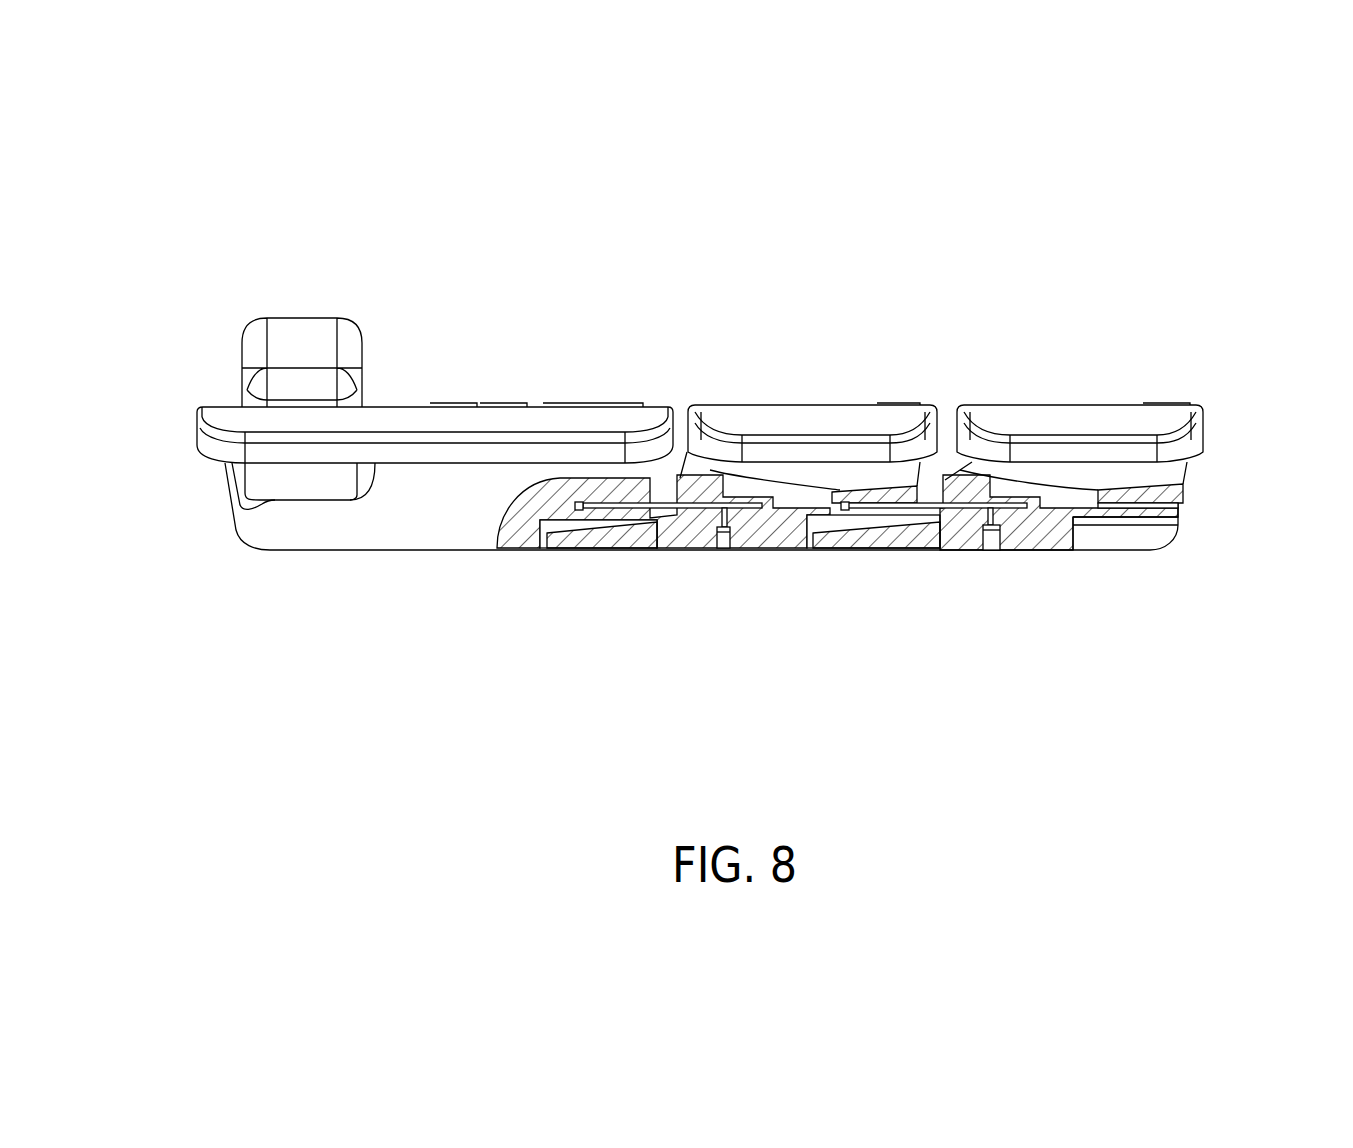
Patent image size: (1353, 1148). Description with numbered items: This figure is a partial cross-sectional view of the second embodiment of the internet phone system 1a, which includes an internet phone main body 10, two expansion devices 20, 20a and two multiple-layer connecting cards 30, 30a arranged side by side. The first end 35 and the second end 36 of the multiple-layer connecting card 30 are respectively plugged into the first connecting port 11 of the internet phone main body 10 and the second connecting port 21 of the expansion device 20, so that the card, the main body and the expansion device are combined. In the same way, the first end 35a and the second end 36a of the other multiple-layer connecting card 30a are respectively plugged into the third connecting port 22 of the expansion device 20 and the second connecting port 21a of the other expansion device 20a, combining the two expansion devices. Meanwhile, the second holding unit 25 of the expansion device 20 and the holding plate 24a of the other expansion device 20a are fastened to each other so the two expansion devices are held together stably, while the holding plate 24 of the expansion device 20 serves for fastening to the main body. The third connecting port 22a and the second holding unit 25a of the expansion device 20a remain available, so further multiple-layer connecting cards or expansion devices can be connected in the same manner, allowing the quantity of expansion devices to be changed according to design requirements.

The internet phone system 1a is at (237, 153).
The internet phone main body 10 is at (687, 434).
The first connecting port 11 is at (560, 550).
The expansion device 20 is at (813, 392).
The expansion device 20a is at (1073, 405).
The second connecting port 21 is at (778, 478).
The second connecting port 21a is at (1047, 550).
The third connecting port 22 is at (843, 550).
The third connecting port 22a is at (1177, 503).
The holding plate 24 is at (622, 550).
The holding plate 24a is at (890, 550).
The second holding unit 25 is at (800, 550).
The second holding unit 25a is at (1140, 545).
The multiple-layer connecting card 30 is at (657, 550).
The multiple-layer connecting card 30a is at (925, 550).
The first end 35 is at (592, 514).
The first end 35a is at (857, 497).
The second end 36 is at (750, 516).
The second end 36a is at (1012, 514).